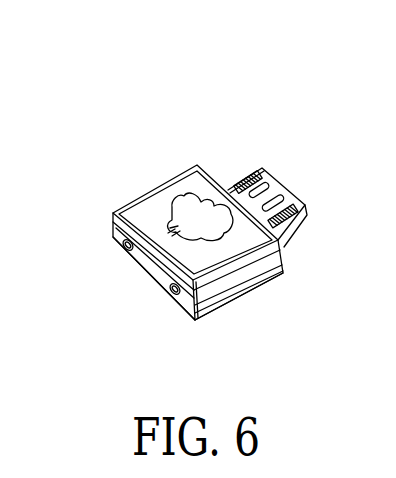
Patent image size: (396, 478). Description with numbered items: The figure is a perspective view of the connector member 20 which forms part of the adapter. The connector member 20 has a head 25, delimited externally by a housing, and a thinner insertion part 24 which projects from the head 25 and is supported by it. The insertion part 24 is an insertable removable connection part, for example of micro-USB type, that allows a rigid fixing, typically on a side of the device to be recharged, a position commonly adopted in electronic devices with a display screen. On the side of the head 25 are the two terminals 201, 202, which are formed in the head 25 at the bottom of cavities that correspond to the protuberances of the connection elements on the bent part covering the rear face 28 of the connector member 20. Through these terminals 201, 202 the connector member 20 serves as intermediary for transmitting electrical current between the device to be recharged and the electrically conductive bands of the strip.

The connector member 20 is at (181, 145).
The insertion part 24 is at (300, 212).
The head 25 is at (228, 272).
The rear face 28 is at (150, 270).
The terminal 201 is at (122, 252).
The terminal 202 is at (180, 290).